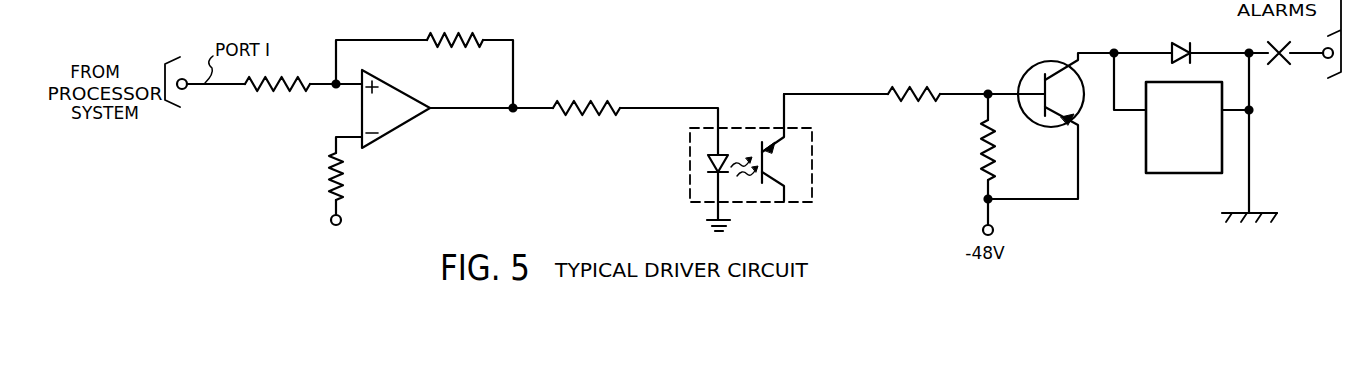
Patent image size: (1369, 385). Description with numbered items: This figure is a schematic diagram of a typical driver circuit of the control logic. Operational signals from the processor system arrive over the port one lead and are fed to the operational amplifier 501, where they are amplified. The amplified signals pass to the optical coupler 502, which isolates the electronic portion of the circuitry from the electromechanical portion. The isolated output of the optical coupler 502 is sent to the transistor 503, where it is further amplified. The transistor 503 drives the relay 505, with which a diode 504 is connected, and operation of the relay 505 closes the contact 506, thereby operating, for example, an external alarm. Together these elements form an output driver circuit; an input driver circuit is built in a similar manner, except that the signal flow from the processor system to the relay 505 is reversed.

The operational amplifier 501 is at (388, 131).
The optical coupler 502 is at (688, 148).
The transistor 503 is at (1023, 73).
The diode 504 is at (1171, 44).
The relay 505 is at (1157, 179).
The contact 506 is at (1267, 44).